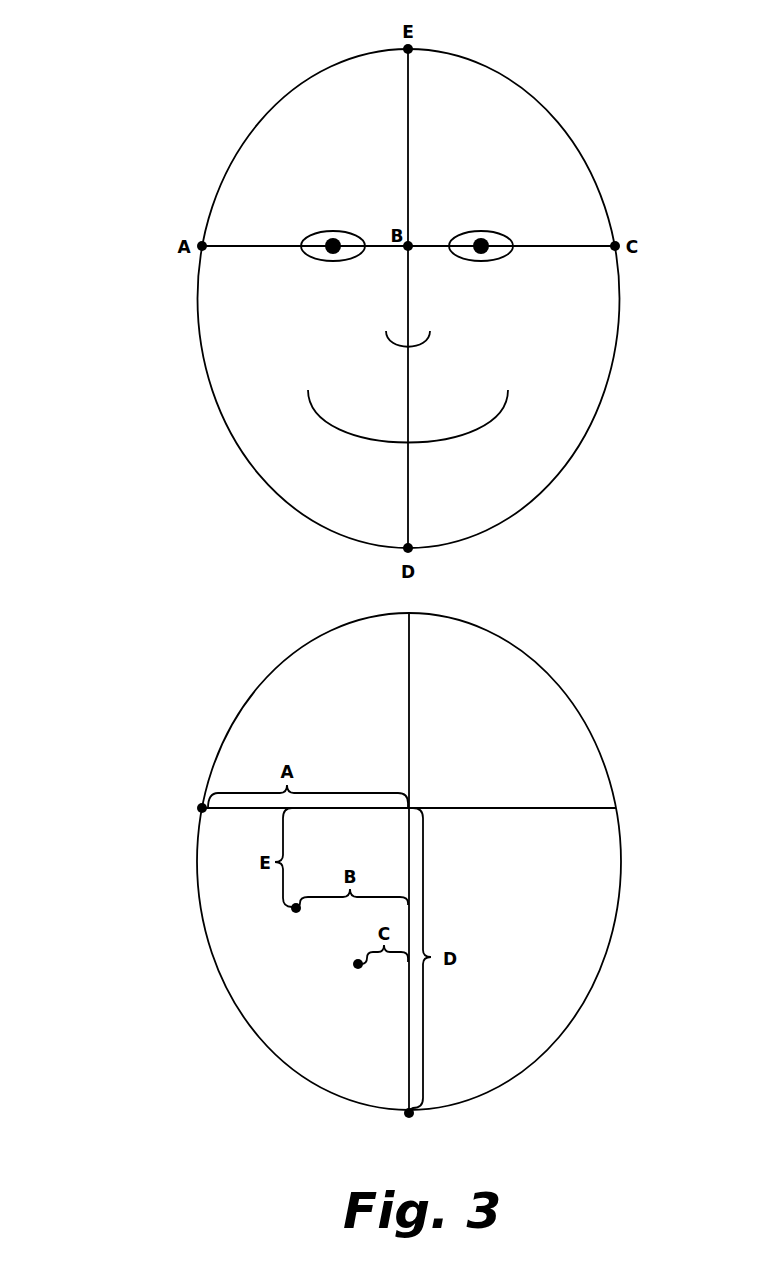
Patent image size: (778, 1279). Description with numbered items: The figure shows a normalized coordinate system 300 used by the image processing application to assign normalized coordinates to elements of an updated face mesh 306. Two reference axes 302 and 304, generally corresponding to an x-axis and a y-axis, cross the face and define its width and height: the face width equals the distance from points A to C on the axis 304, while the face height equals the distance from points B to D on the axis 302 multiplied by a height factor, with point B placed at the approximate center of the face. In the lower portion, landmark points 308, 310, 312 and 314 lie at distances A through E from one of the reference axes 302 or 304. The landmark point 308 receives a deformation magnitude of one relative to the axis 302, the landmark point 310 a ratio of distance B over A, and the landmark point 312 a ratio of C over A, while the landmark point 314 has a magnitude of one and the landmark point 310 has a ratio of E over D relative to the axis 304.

The facial feature measurement diagram 300 is at (131, 86).
The reference axis 302 is at (410, 85).
The reference axis 304 is at (592, 246).
The updated face mesh 306 is at (612, 372).
The landmark point 308 is at (217, 819).
The landmark point 310 is at (294, 919).
The landmark point 312 is at (359, 975).
The landmark point 314 is at (409, 1126).